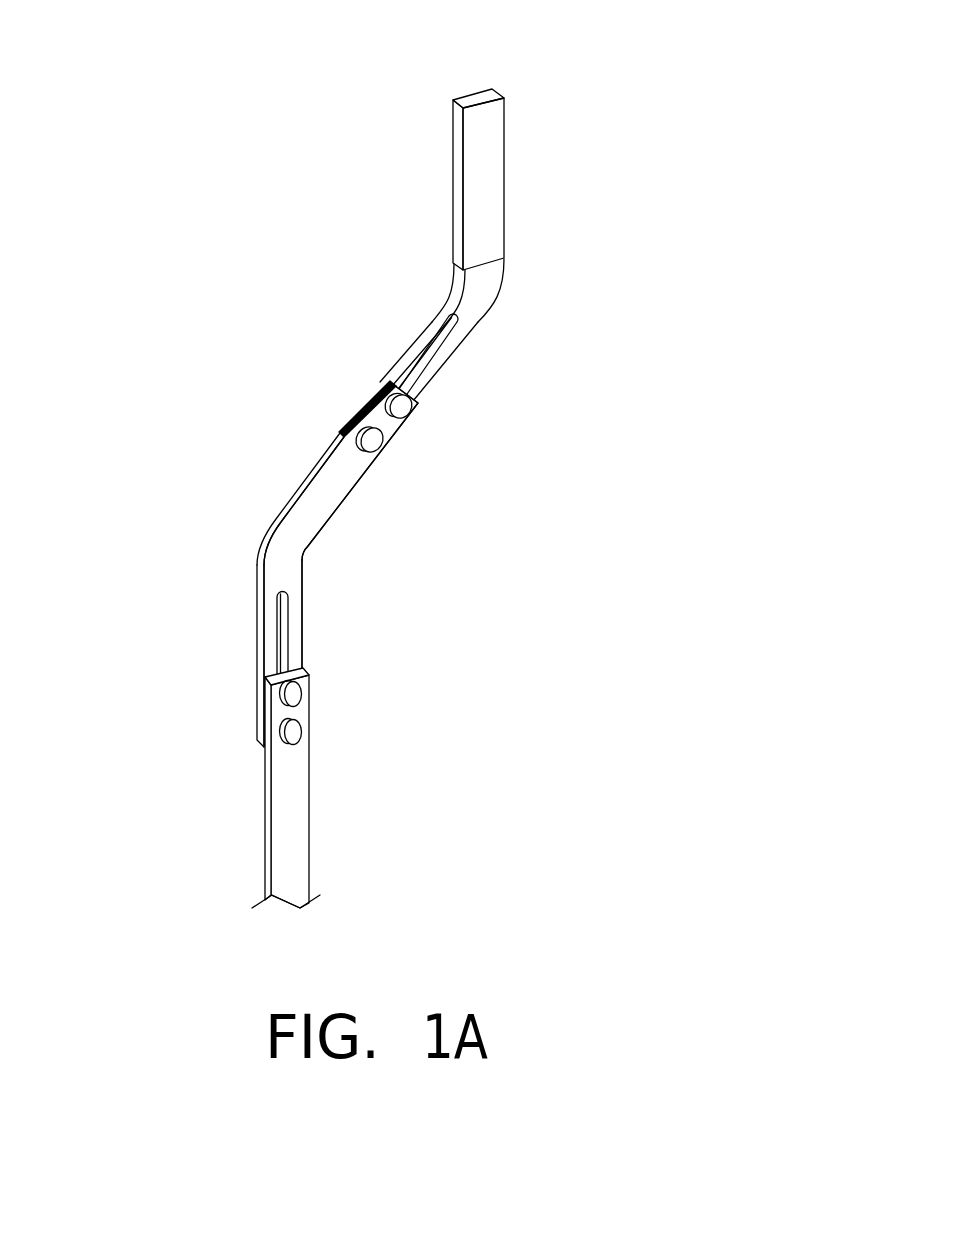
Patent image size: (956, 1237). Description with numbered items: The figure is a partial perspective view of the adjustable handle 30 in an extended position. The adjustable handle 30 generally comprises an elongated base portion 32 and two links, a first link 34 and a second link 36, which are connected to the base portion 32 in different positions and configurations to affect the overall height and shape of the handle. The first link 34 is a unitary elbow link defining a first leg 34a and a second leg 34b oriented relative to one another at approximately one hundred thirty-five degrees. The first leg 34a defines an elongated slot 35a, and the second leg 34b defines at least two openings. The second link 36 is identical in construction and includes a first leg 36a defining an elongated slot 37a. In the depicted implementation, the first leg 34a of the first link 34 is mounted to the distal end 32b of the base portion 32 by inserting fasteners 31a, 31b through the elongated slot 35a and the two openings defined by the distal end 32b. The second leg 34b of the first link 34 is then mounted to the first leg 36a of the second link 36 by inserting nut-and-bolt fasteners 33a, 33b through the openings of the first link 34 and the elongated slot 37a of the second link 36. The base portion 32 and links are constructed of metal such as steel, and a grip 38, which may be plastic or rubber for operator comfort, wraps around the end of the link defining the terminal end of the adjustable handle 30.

The adjustable handle 30 is at (177, 273).
The grip 38 is at (505, 113).
The second link 36 is at (474, 348).
The first leg of the second link 36a is at (436, 348).
The elongated slot 37a is at (443, 340).
The first link 34 is at (345, 565).
The first leg of the first link 34a is at (308, 653).
The second leg of the first link 34b is at (403, 491).
The fastener 33a is at (401, 408).
The fastener 33b is at (374, 441).
The elongated slot 35a is at (285, 614).
The elongated base portion 32 is at (310, 788).
The distal end of the base portion 32b is at (268, 688).
The fastener 31a is at (295, 691).
The fastener 31b is at (295, 732).